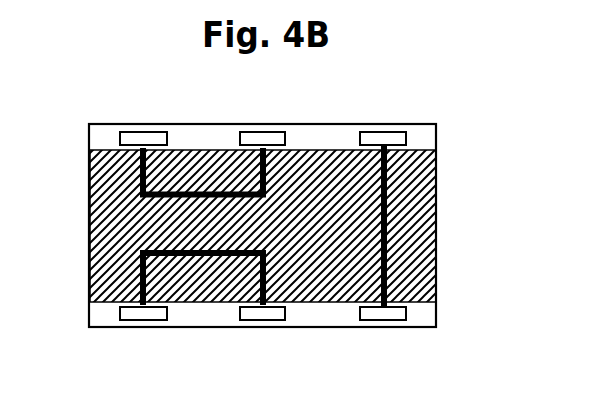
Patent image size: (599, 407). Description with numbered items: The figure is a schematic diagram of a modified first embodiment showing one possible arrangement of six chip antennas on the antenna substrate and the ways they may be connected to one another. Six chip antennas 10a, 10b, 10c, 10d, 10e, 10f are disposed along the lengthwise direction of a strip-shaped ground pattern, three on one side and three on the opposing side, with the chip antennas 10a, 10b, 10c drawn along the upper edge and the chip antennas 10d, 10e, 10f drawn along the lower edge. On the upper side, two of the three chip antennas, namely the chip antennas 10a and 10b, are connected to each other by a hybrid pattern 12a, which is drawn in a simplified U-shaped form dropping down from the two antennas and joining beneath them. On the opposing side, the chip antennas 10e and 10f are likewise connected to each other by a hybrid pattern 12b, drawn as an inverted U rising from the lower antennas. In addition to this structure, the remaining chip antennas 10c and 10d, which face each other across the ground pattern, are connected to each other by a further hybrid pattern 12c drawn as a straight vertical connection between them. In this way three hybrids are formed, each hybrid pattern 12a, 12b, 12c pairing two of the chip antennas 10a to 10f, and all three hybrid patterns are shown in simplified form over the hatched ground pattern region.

The chip antenna 10a is at (144, 128).
The chip antenna 10b is at (263, 128).
The chip antenna 10c is at (383, 128).
The chip antenna 10d is at (384, 323).
The chip antenna 10e is at (263, 323).
The chip antenna 10f is at (143, 323).
The hybrid pattern 12a is at (141, 182).
The hybrid pattern 12b is at (141, 281).
The hybrid pattern 12c is at (390, 193).